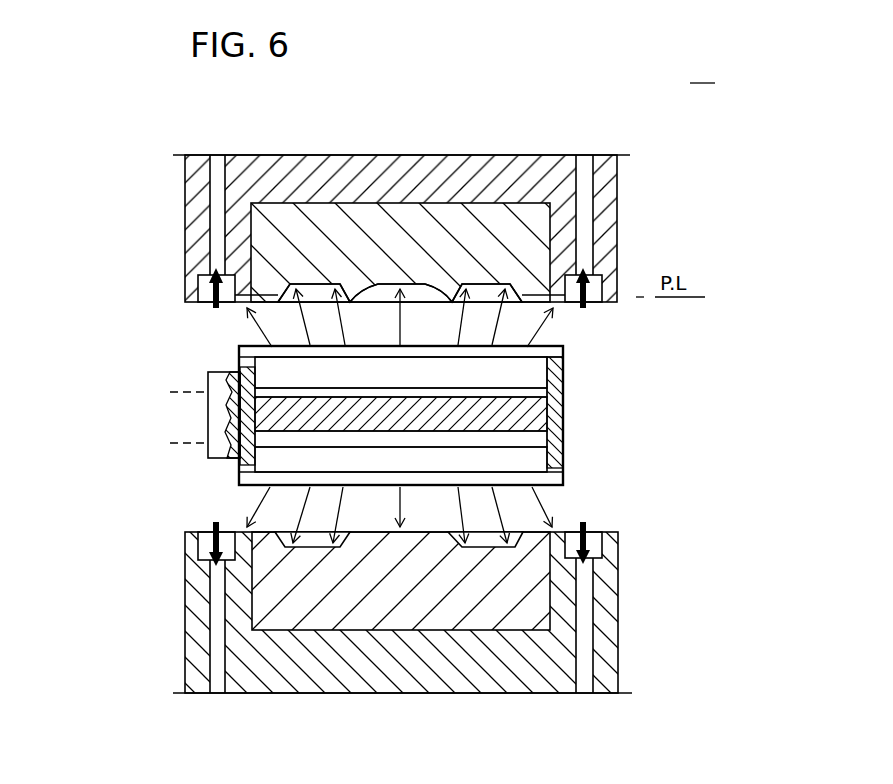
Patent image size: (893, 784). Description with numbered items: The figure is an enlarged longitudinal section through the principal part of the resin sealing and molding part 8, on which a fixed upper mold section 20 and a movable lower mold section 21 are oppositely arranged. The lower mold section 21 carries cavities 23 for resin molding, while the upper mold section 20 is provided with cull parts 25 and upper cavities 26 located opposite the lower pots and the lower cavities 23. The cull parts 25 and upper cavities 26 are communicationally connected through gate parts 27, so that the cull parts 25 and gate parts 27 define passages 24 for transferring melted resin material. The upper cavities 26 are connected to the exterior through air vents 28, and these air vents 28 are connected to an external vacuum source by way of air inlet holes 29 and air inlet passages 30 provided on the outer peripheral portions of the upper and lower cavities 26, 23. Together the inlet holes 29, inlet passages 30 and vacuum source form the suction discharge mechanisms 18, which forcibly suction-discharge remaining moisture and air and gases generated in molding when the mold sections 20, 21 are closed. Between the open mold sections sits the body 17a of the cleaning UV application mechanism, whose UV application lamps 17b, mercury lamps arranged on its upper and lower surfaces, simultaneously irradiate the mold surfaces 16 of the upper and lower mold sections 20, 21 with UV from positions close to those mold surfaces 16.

The resin sealing and molding part 8 is at (459, 178).
The mold surfaces 16 is at (273, 330).
The body of the cleaning UV application mechanism 17a is at (540, 411).
The UV application lamps 17b is at (534, 362).
The suction discharge mechanisms 18 is at (215, 243).
The air inlet passages 30 is at (403, 424).
The fixed upper mold section 20 is at (598, 173).
The movable lower mold section 21 is at (608, 668).
The cavities 23 is at (314, 542).
The passages 24 is at (455, 90).
The cull parts 25 is at (415, 290).
The upper cavities 26 is at (313, 291).
The gate parts 27 is at (368, 290).
The air vents 28 is at (240, 303).
The air inlet holes 29 is at (207, 290).